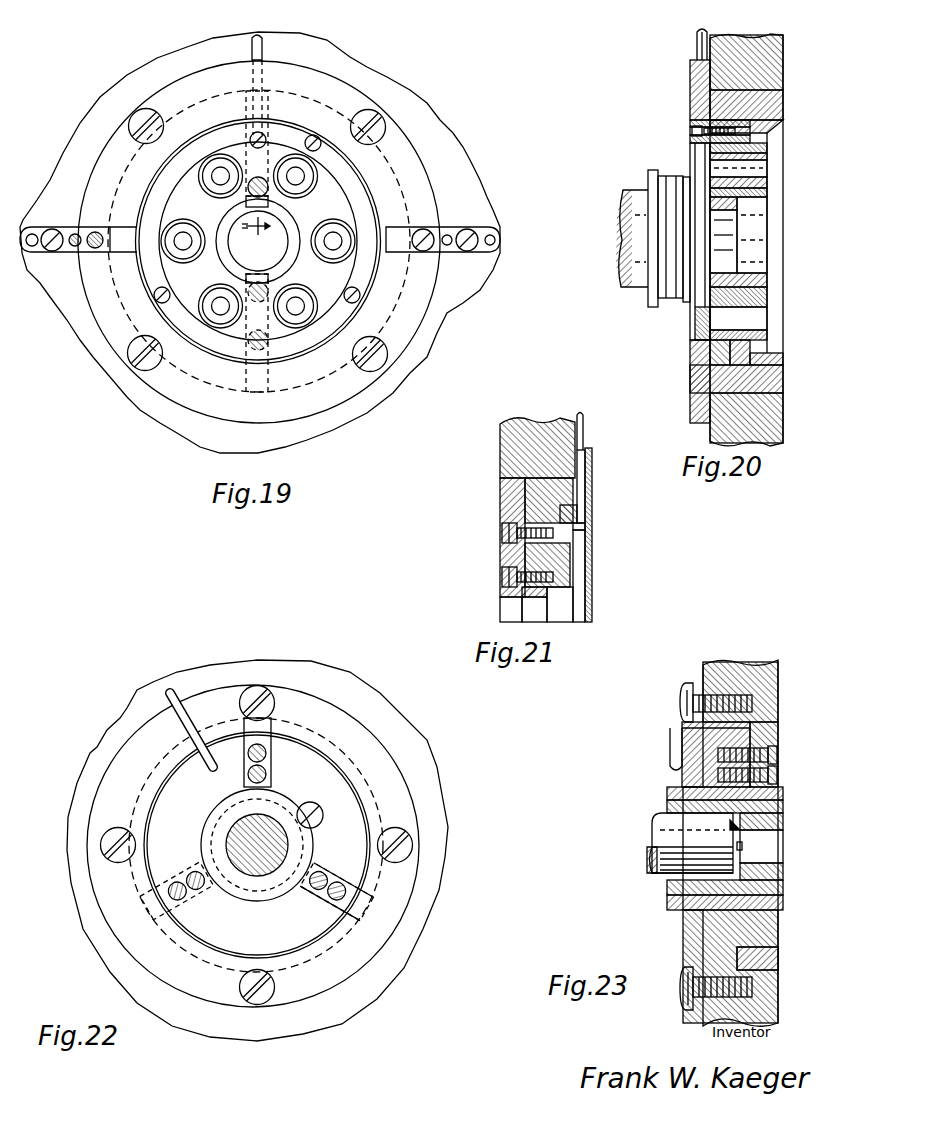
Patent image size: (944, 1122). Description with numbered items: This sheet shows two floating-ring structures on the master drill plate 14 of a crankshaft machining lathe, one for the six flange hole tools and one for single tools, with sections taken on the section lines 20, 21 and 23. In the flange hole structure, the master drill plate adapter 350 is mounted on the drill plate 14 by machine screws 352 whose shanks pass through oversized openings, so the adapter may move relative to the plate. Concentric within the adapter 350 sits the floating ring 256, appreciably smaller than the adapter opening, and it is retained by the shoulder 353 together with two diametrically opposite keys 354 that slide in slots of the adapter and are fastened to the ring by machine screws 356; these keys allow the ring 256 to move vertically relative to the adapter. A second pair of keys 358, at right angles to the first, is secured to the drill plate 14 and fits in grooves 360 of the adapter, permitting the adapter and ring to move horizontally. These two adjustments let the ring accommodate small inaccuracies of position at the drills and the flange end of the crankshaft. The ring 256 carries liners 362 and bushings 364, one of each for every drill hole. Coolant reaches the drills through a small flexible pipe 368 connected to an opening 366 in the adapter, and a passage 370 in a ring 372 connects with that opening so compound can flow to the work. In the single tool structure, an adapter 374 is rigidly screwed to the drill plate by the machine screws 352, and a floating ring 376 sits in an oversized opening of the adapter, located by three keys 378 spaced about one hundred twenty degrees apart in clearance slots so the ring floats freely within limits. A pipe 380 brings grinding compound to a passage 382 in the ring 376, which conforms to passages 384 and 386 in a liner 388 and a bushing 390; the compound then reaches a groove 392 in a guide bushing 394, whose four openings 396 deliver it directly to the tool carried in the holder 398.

In FIG. 19, the master drill plate 14 is at (463, 167).
In FIG. 20, the master drill plate 14 is at (720, 408).
In FIG. 21, the master drill plate 14 is at (518, 432).
In FIG. 22, the master drill plate 14 is at (326, 674).
In FIG. 23, the master drill plate 14 is at (747, 663).
In FIG. 19, the section line 20— 20 is at (358, 35).
In FIG. 19, the section line 21— 21 is at (258, 12).
In FIG. 22, the section line 23— 23 is at (239, 636).
In FIG. 19, the floating ring 256 is at (354, 183).
In FIG. 20, the floating ring 256 is at (690, 119).
In FIG. 21, the floating ring 256 is at (558, 560).
In FIG. 19, the master drill plate adapter 350 is at (106, 156).
In FIG. 20, the master drill plate adapter 350 is at (690, 82).
In FIG. 21, the master drill plate adapter 350 is at (592, 480).
In FIG. 19, the machine screws 352 is at (140, 116).
In FIG. 22, the machine screws 352 is at (114, 836).
In FIG. 23, the machine screws 352 is at (678, 715).
In FIG. 21, the shoulder 353 is at (537, 507).
In FIG. 19, the keys 354 is at (246, 108).
In FIG. 21, the keys 354 is at (510, 507).
In FIG. 19, the machine screws 356 is at (268, 138).
In FIG. 21, the machine screws 356 is at (503, 532).
In FIG. 19, the keys 358 is at (402, 238).
In FIG. 19, the grooves 360 is at (118, 250).
In FIG. 19, the liners 362 is at (183, 238).
In FIG. 20, the liners 362 is at (712, 146).
In FIG. 19, the bushings 364 is at (185, 249).
In FIG. 20, the bushings 364 is at (712, 310).
In FIG. 19, the opening 366 is at (257, 217).
In FIG. 21, the opening 366 is at (585, 460).
In FIG. 19, the tube or pipe 368 is at (265, 45).
In FIG. 20, the tube or pipe 368 is at (697, 37).
In FIG. 21, the tube or pipe 368 is at (577, 413).
In FIG. 21, the passage 370 is at (580, 513).
In FIG. 21, the ring 372 is at (588, 527).
In FIG. 22, the adapter 374 is at (141, 751).
In FIG. 23, the adapter 374 is at (690, 685).
In FIG. 22, the floating ring 376 is at (346, 792).
In FIG. 23, the floating ring 376 is at (692, 757).
In FIG. 22, the keys 378 is at (361, 902).
In FIG. 23, the keys 378 is at (774, 732).
In FIG. 22, the pipe 380 is at (174, 691).
In FIG. 23, the pipe 380 is at (670, 738).
In FIG. 22, the passage 382 is at (240, 800).
In FIG. 22, the passage 384 is at (223, 800).
In FIG. 22, the passage 386 is at (247, 815).
In FIG. 22, the liner 388 is at (273, 797).
In FIG. 23, the liner 388 is at (690, 797).
In FIG. 22, the bushing 390 is at (307, 845).
In FIG. 23, the bushing 390 is at (668, 795).
In FIG. 22, the groove 392 is at (240, 887).
In FIG. 23, the groove 392 is at (775, 793).
In FIG. 23, the guide bushing 394 is at (778, 850).
In FIG. 23, the openings 396 is at (738, 846).
In FIG. 22, the tool holder 398 is at (263, 873).
In FIG. 23, the tool holder 398 is at (662, 850).